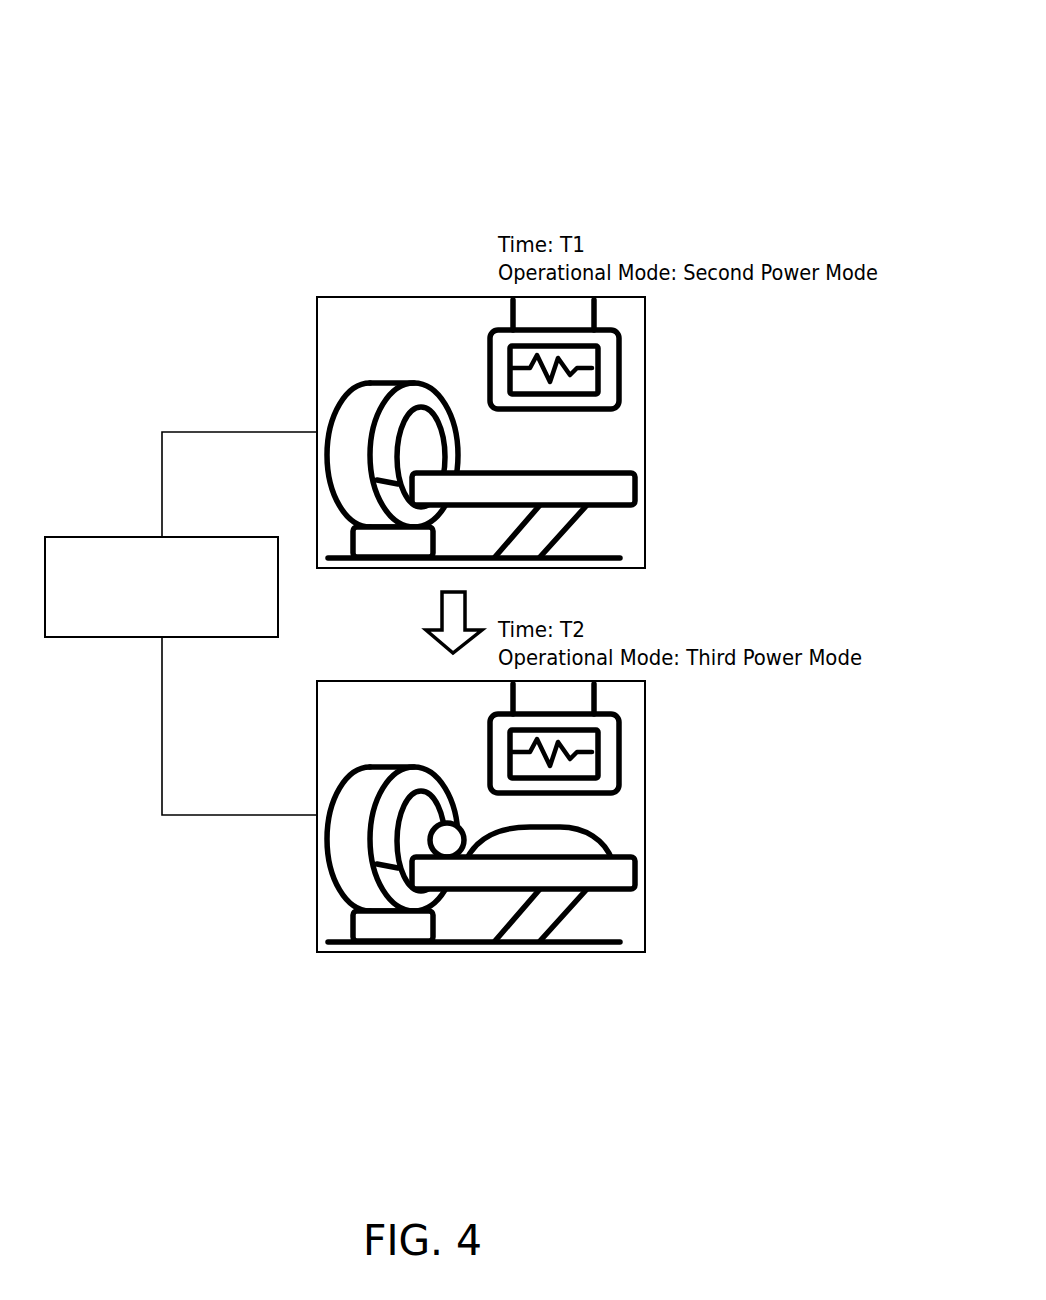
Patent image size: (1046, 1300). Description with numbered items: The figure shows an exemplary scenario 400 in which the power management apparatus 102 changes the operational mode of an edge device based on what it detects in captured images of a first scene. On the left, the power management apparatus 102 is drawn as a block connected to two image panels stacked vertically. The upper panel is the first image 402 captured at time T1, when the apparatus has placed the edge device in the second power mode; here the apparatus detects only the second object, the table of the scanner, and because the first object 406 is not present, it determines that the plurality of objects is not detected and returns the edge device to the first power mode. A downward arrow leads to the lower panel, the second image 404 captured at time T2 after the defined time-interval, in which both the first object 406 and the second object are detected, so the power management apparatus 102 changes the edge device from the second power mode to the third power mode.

The exemplary scenario 400 is at (709, 36).
The power management apparatus 102 is at (230, 614).
The first image 402 is at (317, 365).
The second image 404 is at (317, 765).
The first object 406 is at (564, 797).